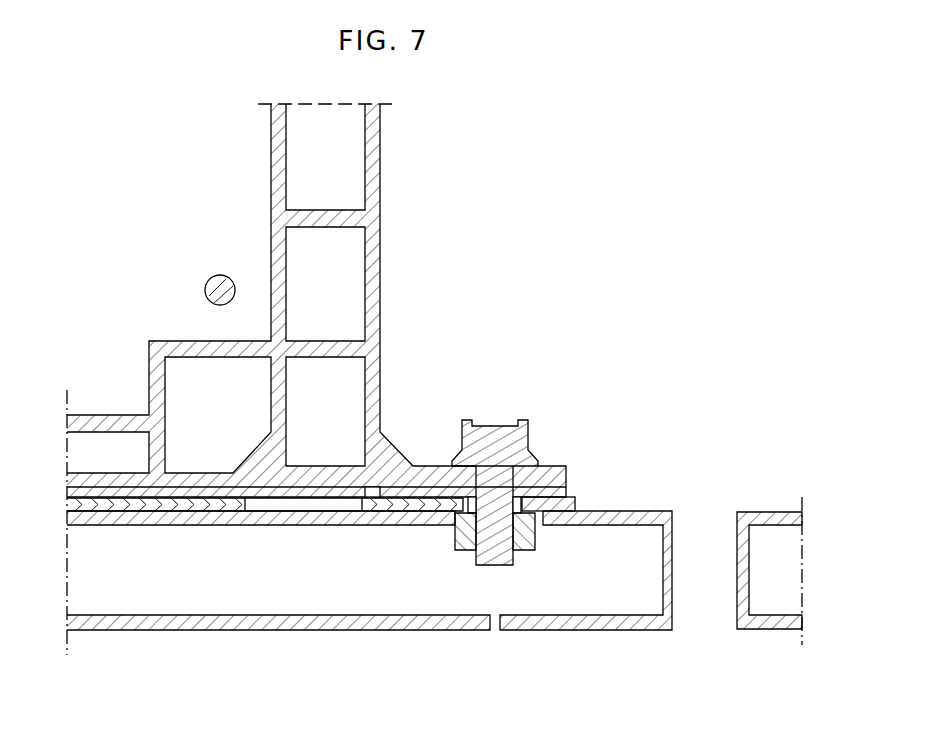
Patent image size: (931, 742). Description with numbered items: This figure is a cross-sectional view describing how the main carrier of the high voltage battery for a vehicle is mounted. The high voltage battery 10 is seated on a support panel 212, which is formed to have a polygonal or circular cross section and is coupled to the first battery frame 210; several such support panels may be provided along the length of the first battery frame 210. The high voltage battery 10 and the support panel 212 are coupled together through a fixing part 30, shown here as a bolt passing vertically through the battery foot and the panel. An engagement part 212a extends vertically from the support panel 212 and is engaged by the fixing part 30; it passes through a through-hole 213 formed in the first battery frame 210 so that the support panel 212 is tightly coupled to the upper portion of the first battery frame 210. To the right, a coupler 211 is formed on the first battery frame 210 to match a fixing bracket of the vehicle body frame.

The high voltage battery 10 is at (383, 170).
The fixing part 30 is at (493, 433).
The first battery frame 210 is at (312, 632).
The coupler 211 is at (780, 620).
The support panel 212 is at (574, 501).
The engagement part 212a is at (523, 551).
The through-hole 213 is at (456, 523).